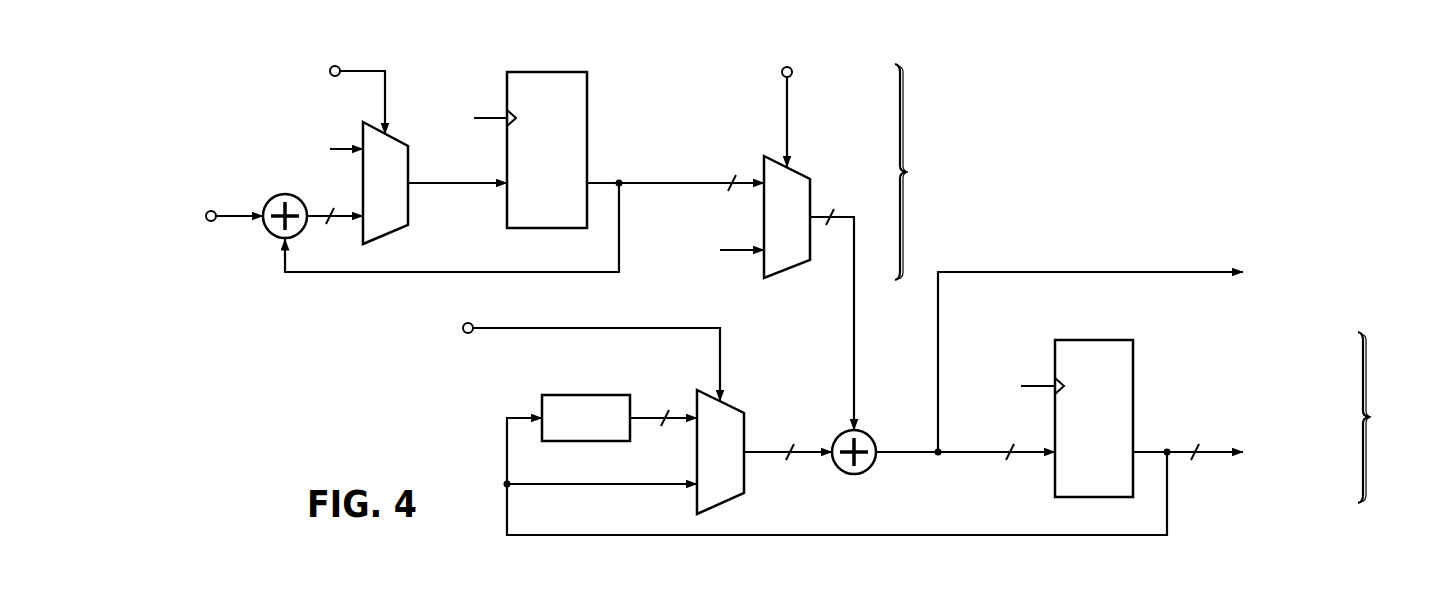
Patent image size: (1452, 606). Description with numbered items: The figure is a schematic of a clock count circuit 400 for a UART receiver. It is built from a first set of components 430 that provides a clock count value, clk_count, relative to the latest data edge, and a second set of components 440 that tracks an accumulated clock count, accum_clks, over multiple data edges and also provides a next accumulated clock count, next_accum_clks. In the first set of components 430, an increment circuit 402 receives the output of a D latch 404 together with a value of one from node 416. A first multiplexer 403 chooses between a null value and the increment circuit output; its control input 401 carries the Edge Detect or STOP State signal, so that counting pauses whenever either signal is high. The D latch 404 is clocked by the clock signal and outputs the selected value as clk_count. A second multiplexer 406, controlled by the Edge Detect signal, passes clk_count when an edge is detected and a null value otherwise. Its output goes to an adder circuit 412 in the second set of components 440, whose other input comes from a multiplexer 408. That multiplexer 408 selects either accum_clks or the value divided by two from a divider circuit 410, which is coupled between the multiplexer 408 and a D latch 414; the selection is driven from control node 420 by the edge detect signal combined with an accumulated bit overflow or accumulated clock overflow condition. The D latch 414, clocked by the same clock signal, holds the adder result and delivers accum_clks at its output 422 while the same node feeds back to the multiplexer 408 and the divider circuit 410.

The clock count circuit 400 is at (1038, 76).
The reset input (EDGE DETECT || STOP STATE) 401 is at (334, 65).
The increment circuit 402 is at (268, 199).
The first multiplexer 403 is at (408, 200).
The D latch 404 is at (587, 132).
The second multiplexer 406 is at (810, 195).
The multiplexer 408 is at (744, 475).
The divider circuit 410 is at (585, 395).
The adder circuit 412 is at (868, 468).
The D latch 414 is at (1093, 340).
The node 416 is at (209, 222).
The control node 420 is at (1158, 270).
The accum_clks output 422 is at (1210, 455).
The first set of components 430 is at (926, 172).
The second set of components 440 is at (1390, 417).